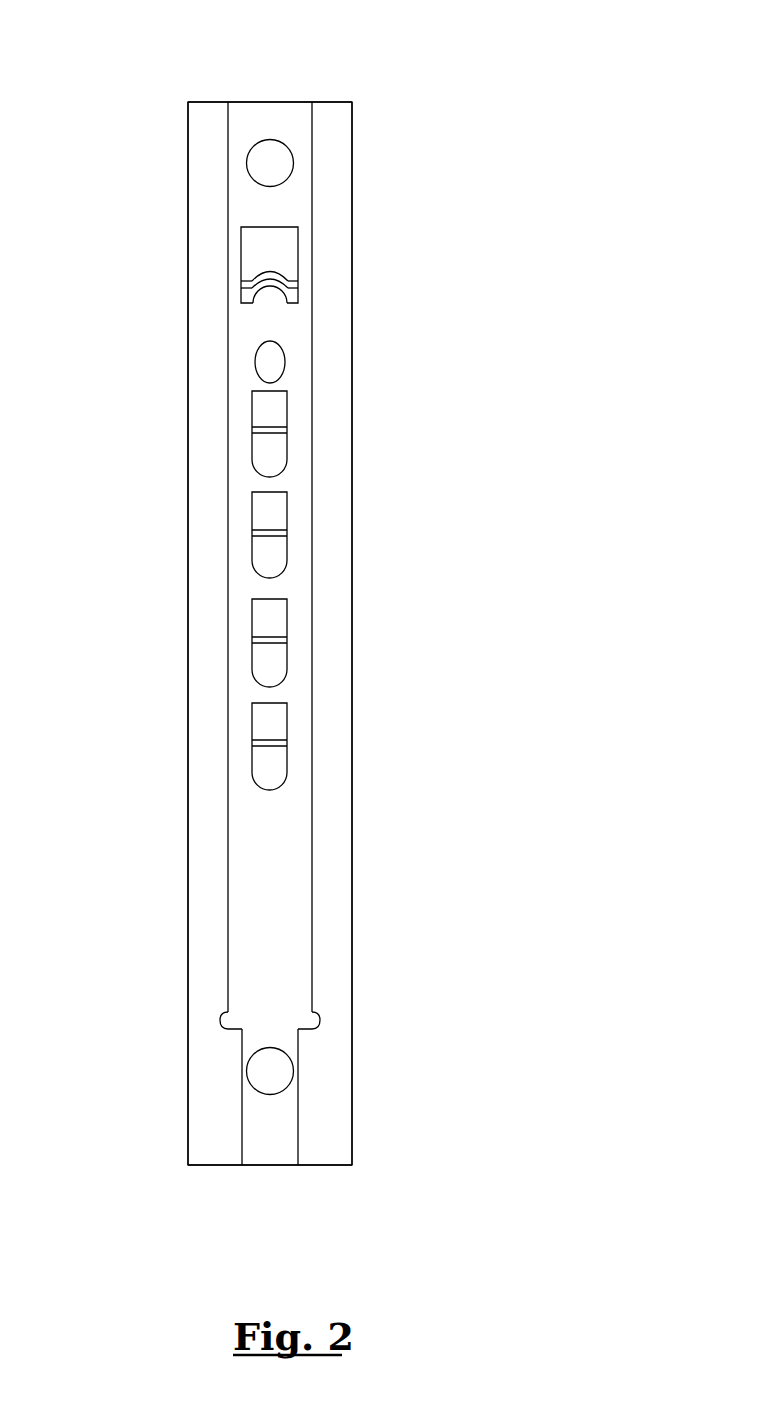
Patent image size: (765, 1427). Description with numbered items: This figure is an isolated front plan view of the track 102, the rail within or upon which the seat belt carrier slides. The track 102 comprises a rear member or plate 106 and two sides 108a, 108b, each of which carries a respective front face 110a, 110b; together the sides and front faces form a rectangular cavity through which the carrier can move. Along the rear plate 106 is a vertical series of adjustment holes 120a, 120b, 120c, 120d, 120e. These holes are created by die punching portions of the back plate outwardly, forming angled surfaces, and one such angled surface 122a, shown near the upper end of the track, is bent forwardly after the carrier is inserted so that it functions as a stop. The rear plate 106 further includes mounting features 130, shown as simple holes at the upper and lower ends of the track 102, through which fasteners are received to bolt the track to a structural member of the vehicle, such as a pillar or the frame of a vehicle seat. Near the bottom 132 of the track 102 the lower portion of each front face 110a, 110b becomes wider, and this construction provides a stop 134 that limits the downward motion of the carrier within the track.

The track 102 is at (410, 504).
The rear plate 106 is at (297, 117).
The side 108a is at (188, 181).
The side 108b is at (350, 152).
The front face 110a is at (210, 388).
The front face 110b is at (337, 223).
The adjustment hole 120a is at (268, 775).
The adjustment hole 120b is at (268, 670).
The adjustment hole 120c is at (273, 563).
The adjustment hole 120d is at (273, 460).
The adjustment hole 120e is at (268, 370).
The angled surface 122a is at (268, 253).
The mounting feature 130 is at (270, 160).
The bottom 132 is at (213, 1128).
The stop 134 is at (298, 1027).